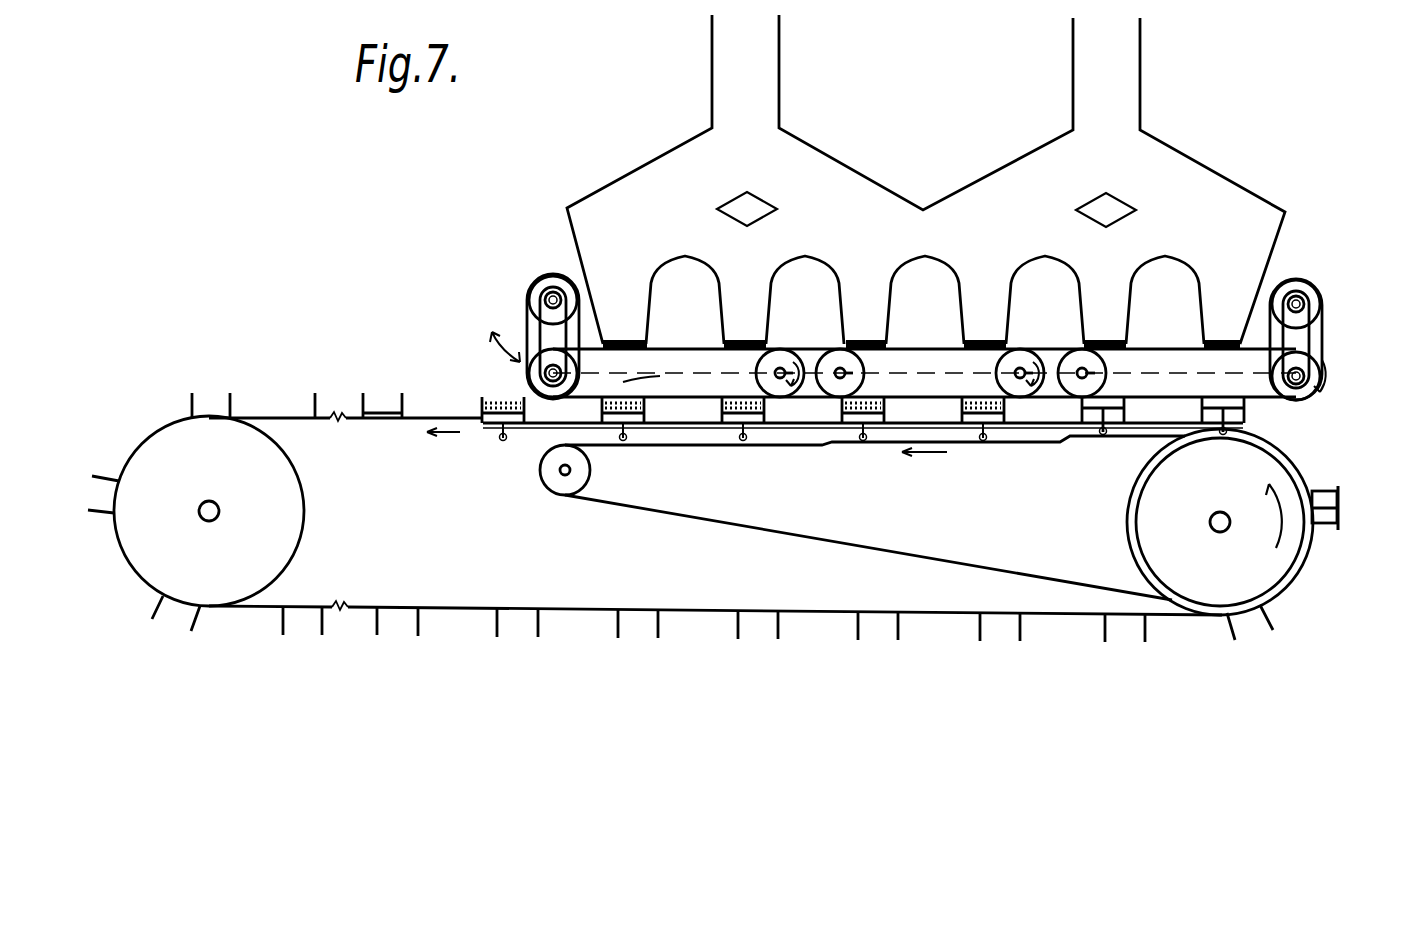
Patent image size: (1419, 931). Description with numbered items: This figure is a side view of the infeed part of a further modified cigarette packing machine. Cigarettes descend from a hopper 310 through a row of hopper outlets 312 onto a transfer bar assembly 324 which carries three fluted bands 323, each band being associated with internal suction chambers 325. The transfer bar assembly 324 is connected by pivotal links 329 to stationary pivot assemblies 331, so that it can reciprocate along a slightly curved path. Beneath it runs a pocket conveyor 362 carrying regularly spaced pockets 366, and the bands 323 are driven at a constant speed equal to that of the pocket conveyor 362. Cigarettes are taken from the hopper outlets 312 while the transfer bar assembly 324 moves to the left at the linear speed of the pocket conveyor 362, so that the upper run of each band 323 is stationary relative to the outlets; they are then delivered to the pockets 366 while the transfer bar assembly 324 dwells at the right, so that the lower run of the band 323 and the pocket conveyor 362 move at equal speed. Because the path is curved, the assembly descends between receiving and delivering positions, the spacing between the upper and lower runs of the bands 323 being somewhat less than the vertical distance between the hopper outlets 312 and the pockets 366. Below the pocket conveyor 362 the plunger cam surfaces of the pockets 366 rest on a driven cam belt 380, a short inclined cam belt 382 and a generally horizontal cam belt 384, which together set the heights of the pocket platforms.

The hopper 310 is at (1218, 173).
The hopper outlets 312 is at (719, 318).
The fluted bands 323 is at (534, 394).
The transfer bar assembly 324 is at (818, 349).
The internal suction chambers 325 is at (623, 360).
The pivotal links 329 is at (528, 327).
The stationary pivot assemblies 331 is at (542, 275).
The pocket conveyor 362 is at (1307, 578).
The pockets 366 is at (598, 407).
The driven cam belt 380 is at (1137, 441).
The inclined cam belt 382 is at (1060, 447).
The horizontal cam belt 384 is at (968, 445).